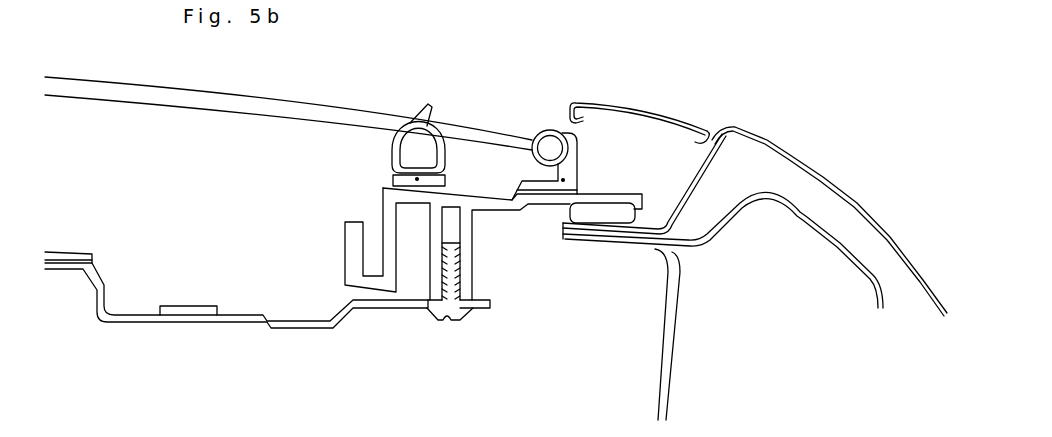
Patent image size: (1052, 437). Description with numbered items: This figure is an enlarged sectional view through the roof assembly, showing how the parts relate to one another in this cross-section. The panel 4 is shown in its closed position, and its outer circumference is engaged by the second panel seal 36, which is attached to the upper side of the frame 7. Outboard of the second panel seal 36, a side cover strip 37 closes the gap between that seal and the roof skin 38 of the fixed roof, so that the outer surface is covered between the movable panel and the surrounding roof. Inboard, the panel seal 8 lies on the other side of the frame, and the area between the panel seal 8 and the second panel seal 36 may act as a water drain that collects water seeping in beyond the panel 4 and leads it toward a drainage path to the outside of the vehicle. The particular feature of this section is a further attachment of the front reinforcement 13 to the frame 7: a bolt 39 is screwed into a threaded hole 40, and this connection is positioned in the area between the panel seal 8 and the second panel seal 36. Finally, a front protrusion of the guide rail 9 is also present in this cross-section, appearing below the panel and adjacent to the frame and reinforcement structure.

The panel 4 is at (318, 108).
The frame 7 is at (493, 206).
The panel seal 8 is at (395, 150).
The guide rail 9 is at (188, 310).
The front reinforcement 13 is at (317, 325).
The second panel seal 36 is at (540, 130).
The side cover strip 37 is at (642, 107).
The roof skin 38 is at (767, 140).
The bolt 39 is at (447, 313).
The threaded hole 40 is at (453, 215).